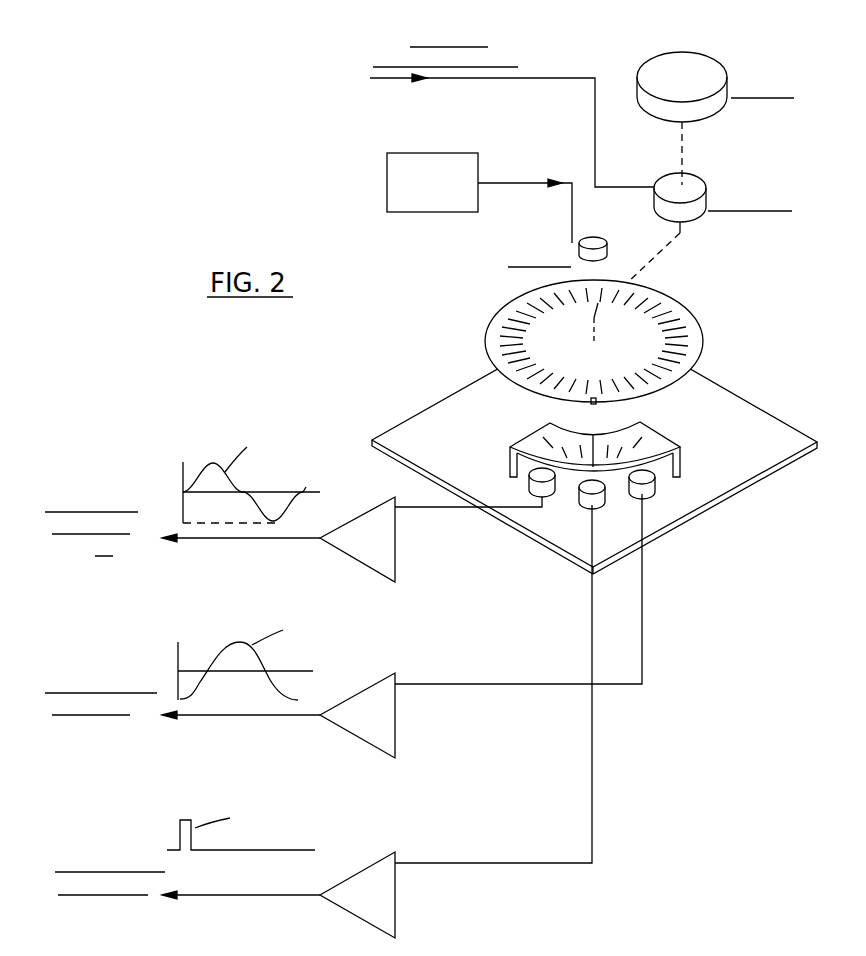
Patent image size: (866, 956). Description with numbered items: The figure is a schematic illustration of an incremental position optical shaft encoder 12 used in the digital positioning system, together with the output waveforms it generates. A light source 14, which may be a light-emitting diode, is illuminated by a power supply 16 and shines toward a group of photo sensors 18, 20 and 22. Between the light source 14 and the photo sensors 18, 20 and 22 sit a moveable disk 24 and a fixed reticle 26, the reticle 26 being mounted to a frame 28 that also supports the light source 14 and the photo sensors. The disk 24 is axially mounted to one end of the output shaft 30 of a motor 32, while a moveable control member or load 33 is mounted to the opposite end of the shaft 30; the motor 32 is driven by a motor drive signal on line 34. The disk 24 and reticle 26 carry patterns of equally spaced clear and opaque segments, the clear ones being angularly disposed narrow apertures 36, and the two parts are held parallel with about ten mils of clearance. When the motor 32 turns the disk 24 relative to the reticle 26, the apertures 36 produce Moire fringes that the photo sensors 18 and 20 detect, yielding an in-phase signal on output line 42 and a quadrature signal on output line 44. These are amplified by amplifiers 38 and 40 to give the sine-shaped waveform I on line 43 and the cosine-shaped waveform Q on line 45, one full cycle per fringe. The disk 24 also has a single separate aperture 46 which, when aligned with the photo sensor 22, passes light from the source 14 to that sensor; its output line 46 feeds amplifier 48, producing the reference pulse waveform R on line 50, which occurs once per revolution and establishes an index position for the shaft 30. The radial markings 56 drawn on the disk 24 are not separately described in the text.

The incremental position optical shaft encoder 12 is at (597, 492).
The light source 14 is at (595, 238).
The power supply 16 is at (431, 207).
The photo sensor 18 is at (535, 487).
The photo sensor 20 is at (655, 488).
The photo sensor 22 is at (597, 498).
The moveable disk 24 is at (613, 338).
The fixed reticle 26 is at (602, 438).
The frame 28 is at (782, 421).
The output shaft 30 is at (666, 247).
The motor 32 is at (690, 182).
The load 33 is at (677, 58).
The line 34 is at (561, 73).
The apertures 36 is at (545, 452).
The amplifier 38 is at (386, 511).
The amplifier 40 is at (375, 690).
The output line 42 is at (442, 508).
The line 43 is at (270, 540).
The output line 44 is at (462, 683).
The line 45 is at (258, 718).
The aperture 46 is at (594, 404).
The amplifier 48 is at (392, 866).
The line 50 is at (250, 895).
The disc slits 56 is at (530, 320).